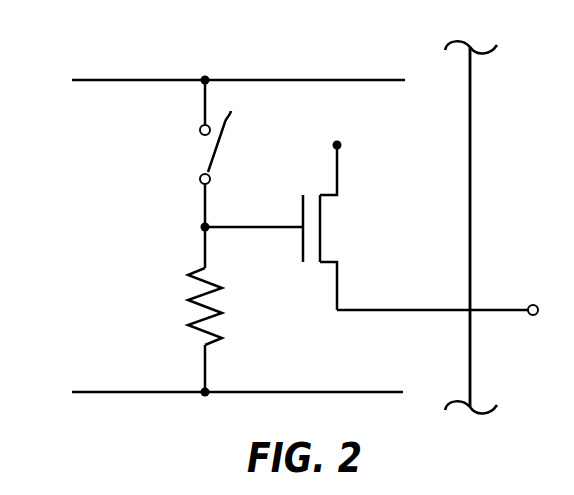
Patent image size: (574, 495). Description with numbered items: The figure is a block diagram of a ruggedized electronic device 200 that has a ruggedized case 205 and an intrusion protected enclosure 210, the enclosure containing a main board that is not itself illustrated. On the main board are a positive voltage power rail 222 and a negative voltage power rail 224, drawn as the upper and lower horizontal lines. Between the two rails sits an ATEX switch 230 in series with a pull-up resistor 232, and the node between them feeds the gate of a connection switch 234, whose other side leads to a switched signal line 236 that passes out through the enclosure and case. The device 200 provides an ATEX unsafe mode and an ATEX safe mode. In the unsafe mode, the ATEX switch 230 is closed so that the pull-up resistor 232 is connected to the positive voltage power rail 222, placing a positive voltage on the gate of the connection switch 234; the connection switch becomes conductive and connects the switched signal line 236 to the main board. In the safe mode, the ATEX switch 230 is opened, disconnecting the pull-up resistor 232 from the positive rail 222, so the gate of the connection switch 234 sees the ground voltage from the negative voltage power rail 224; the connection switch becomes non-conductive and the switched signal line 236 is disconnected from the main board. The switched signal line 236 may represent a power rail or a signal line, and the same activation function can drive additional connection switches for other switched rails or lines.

The ruggedized electronic device 200 is at (58, 433).
The ruggedized case 205 is at (519, 91).
The intrusion protected enclosure 210 is at (454, 91).
The positive voltage power rail 222 is at (378, 80).
The negative voltage power rail 224 is at (378, 392).
The ATEX switch 230 is at (226, 137).
The pull-up resistor 232 is at (216, 287).
The connection switch 234 is at (337, 262).
The switched signal line 236 is at (412, 310).